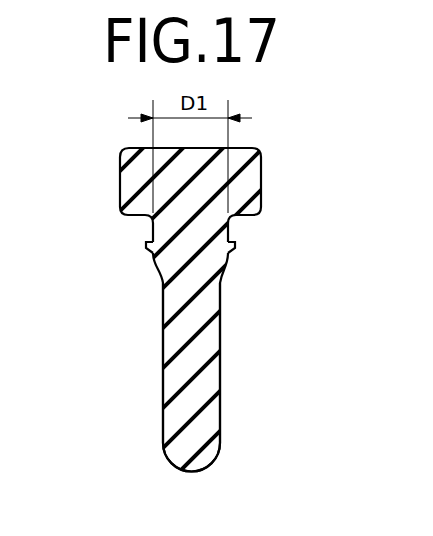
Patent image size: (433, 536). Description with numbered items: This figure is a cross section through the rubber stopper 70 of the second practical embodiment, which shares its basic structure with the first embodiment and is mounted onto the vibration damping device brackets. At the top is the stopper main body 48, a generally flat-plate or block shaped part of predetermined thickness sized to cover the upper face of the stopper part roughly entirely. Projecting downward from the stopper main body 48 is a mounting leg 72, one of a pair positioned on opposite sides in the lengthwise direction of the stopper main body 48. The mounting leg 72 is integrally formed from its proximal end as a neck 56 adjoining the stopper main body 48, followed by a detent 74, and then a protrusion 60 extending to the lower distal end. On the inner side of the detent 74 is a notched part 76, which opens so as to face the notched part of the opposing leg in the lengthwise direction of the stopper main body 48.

The rubber stopper 70 is at (216, 290).
The stopper main body 48 is at (258, 172).
The neck 56 is at (160, 230).
The detent 74 is at (147, 250).
The notched part 76 is at (235, 247).
The protrusion 60 is at (172, 412).
The mounting leg 72 is at (225, 422).